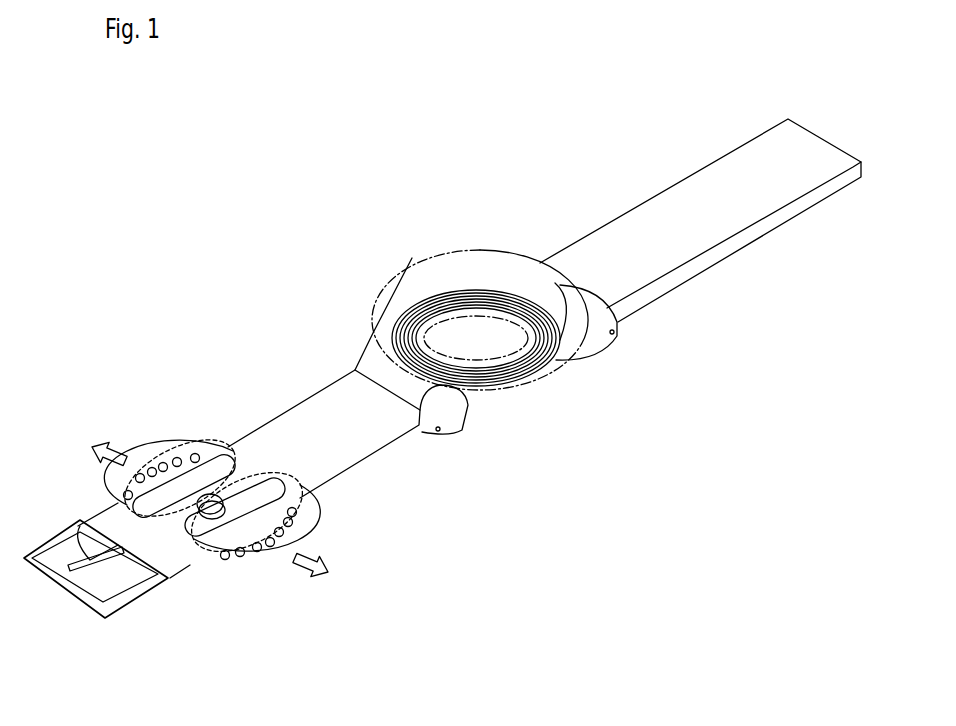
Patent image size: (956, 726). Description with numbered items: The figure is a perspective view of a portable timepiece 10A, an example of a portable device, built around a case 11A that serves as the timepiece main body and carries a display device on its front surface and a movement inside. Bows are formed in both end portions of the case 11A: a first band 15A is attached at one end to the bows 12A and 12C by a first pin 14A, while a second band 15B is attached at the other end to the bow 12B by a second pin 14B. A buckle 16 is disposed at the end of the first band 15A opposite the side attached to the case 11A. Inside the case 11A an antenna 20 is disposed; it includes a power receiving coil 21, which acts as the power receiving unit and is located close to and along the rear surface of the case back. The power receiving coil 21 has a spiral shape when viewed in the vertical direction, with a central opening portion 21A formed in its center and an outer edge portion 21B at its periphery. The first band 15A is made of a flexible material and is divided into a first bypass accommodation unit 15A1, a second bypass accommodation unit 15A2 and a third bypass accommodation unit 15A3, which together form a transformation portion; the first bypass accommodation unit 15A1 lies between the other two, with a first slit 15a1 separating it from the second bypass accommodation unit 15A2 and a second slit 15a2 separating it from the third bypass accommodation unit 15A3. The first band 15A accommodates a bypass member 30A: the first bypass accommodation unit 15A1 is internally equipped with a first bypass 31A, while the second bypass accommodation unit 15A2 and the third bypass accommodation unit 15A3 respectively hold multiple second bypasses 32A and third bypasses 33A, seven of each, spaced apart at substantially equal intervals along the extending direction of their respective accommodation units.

The portable timepiece 10A is at (534, 196).
The case 11A is at (448, 250).
The bow 12A is at (450, 420).
The bow 12B is at (600, 334).
The bow 12C is at (360, 332).
The first pin 14A is at (438, 432).
The second pin 14B is at (615, 334).
The first band 15A is at (317, 390).
The second band 15B is at (733, 245).
The first bypass accommodation unit 15A1 is at (300, 483).
The second bypass accommodation unit 15A2 is at (138, 468).
The third bypass accommodation unit 15A3 is at (280, 550).
The first slit 15a1 is at (218, 453).
The second slit 15a2 is at (220, 527).
The buckle 16 is at (60, 585).
The antenna 20 is at (521, 393).
The power receiving coil 21 is at (470, 355).
The central opening portion 21A is at (477, 353).
The outer edge portion 21B is at (562, 353).
The bypass member 30A is at (190, 560).
The first bypass 31A is at (237, 490).
The second bypasses 32A is at (150, 466).
The third bypasses 33A is at (270, 547).